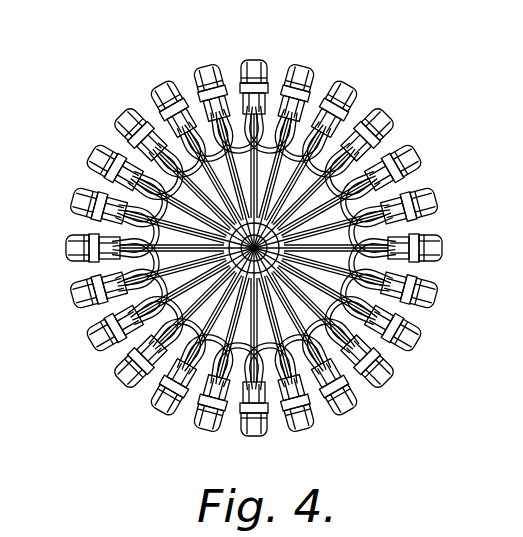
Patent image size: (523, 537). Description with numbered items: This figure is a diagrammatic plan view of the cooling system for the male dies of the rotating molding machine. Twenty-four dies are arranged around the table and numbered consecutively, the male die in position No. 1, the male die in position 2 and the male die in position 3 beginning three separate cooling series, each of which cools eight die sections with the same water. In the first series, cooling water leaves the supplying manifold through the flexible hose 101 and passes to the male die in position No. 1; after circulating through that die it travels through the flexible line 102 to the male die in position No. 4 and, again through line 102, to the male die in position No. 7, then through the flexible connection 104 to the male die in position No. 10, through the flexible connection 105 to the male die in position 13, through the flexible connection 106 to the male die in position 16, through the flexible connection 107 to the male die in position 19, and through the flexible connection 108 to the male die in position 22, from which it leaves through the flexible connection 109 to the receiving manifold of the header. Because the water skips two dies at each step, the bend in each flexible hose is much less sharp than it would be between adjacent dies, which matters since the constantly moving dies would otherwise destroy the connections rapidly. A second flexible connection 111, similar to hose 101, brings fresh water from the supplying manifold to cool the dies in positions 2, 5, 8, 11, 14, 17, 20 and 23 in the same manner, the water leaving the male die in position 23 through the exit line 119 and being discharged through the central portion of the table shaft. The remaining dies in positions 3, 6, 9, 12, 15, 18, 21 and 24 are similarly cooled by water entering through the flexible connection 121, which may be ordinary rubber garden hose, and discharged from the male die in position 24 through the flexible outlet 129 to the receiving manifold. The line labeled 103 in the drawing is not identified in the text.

The male die in position No. 1 is at (278, 143).
The male die in position 2 is at (303, 155).
The male die in position 3 is at (327, 174).
The male die in position No. 4 is at (346, 198).
The male die in position 5 is at (359, 224).
The male die in position 6 is at (365, 248).
The male die in position No. 7 is at (359, 272).
The male die in position 8 is at (346, 297).
The male die in position 9 is at (327, 321).
The male die in position No. 10 is at (303, 340).
The male die in position 11 is at (278, 353).
The male die in position 12 is at (254, 359).
The male die in position 13 is at (230, 353).
The male die in position 14 is at (204, 340).
The male die in position 15 is at (180, 321).
The male die in position 16 is at (161, 297).
The male die in position 17 is at (149, 272).
The male die in position 18 is at (143, 248).
The male die in position 19 is at (149, 224).
The male die in position 20 is at (161, 198).
The male die in position 21 is at (180, 174).
The male die in position 22 is at (204, 155).
The male die in position 23 is at (230, 143).
The male die in position 24 is at (254, 137).
The flexible hose 101 is at (287, 115).
The flexible line 102 is at (356, 165).
The conductor 103 is at (382, 243).
The flexible connection 104 is at (342, 308).
The flexible connection 105 is at (266, 340).
The flexible connection 106 is at (188, 328).
The flexible connection 107 is at (160, 263).
The flexible connection 108 is at (140, 155).
The flexible connection 109 is at (187, 163).
The second flexible connection 111 is at (318, 115).
The exit line 119 is at (232, 130).
The flexible connection 121 is at (337, 135).
The flexible outlet 129 is at (278, 130).